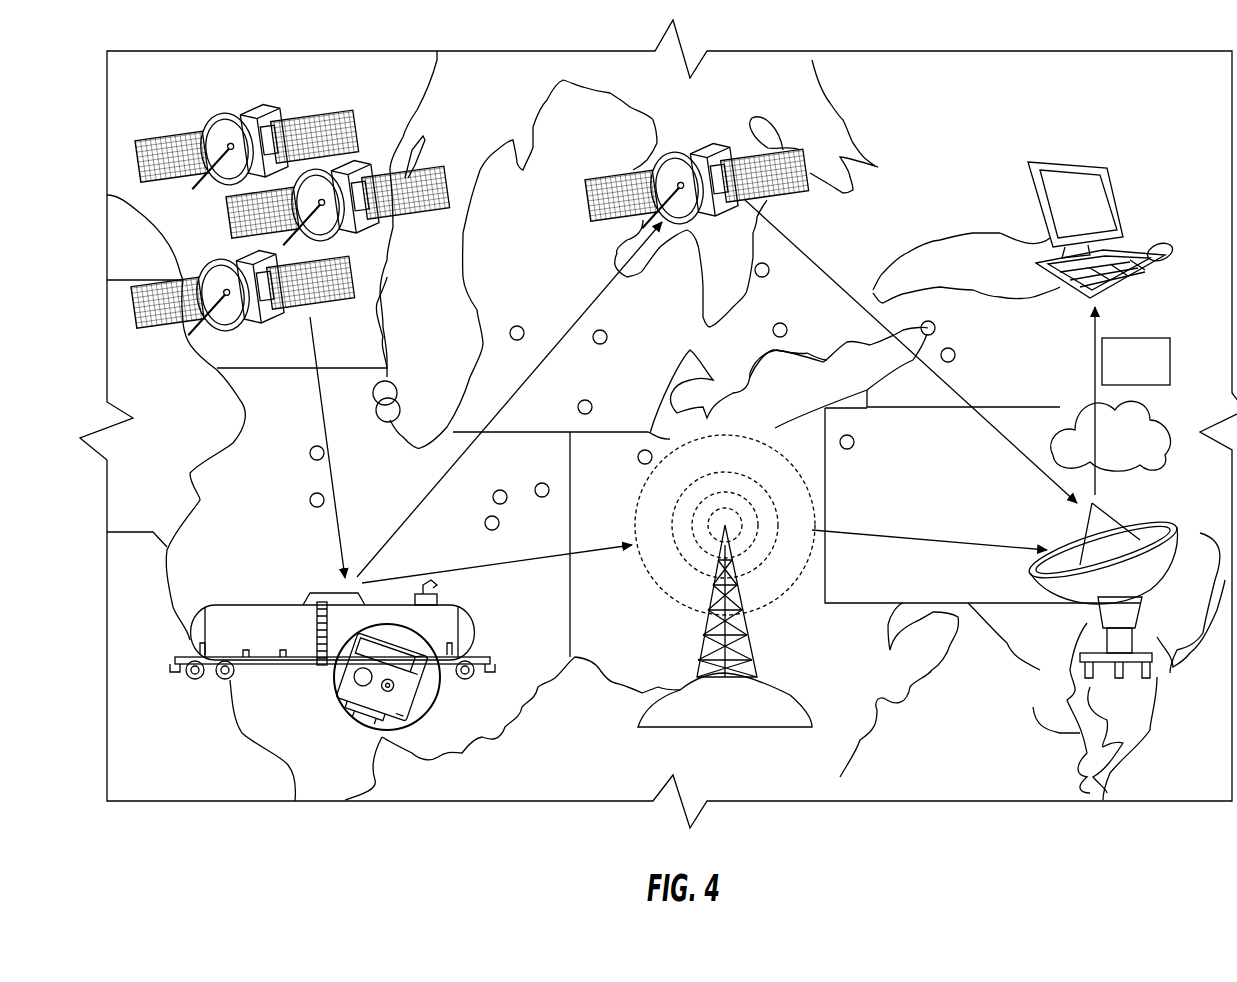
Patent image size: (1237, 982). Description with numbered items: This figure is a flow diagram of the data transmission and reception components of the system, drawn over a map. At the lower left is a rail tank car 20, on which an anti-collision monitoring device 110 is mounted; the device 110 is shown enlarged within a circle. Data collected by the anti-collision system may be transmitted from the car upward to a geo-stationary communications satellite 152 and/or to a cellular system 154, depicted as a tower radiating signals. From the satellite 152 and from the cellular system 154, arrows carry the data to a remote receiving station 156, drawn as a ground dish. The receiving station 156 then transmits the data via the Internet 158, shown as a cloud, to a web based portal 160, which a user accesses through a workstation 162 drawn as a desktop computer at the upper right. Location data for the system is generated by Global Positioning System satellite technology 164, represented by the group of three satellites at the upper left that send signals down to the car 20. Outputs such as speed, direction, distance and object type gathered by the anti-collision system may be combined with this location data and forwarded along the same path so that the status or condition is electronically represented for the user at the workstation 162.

The tank car / railcar 20 is at (275, 593).
The monitoring device 110 is at (345, 700).
The geo-stationary communications satellite 152 is at (633, 172).
The cellular system 154 is at (758, 660).
The remote receiving station 156 is at (1175, 530).
The Internet 158 is at (1160, 433).
The web based portal 160 is at (1160, 338).
The workstation 162 is at (1070, 162).
The Global Positioning System (GPS) satellite technology 164 is at (295, 113).